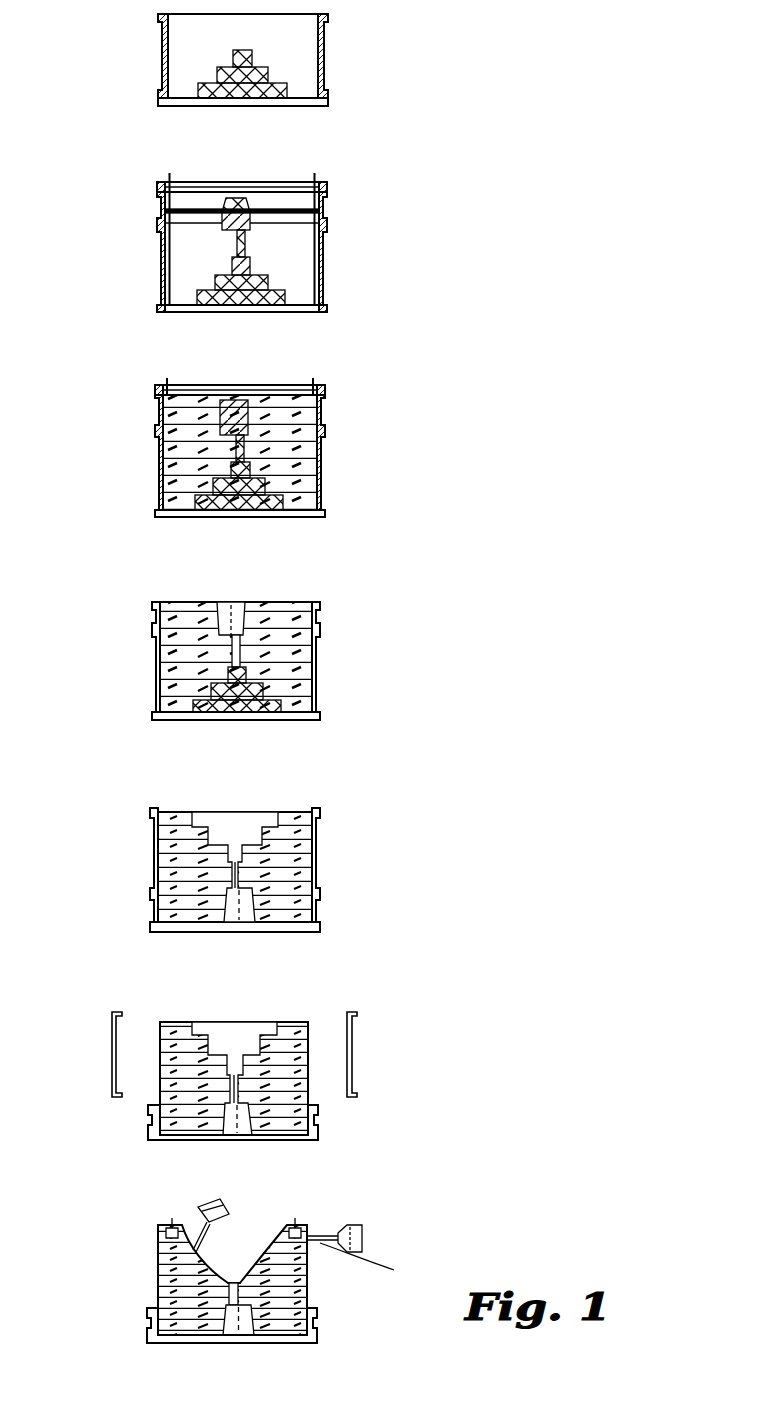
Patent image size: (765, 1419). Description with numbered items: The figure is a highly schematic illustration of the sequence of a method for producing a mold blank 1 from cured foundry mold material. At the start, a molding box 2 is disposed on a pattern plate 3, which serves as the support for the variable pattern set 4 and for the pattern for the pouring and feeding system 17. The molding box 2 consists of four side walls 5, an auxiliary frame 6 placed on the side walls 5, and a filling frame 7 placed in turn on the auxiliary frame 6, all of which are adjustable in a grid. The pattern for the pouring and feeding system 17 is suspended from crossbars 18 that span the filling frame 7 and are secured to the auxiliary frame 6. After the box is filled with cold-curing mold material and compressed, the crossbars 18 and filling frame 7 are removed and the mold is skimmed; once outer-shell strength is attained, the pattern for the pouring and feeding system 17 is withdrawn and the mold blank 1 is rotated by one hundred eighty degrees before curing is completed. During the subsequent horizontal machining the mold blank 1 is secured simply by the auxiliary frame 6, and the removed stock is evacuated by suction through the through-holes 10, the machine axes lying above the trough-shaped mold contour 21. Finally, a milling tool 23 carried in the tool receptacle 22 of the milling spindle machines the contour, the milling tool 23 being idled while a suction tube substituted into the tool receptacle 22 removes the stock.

The mold blank 1 is at (294, 878).
The molding box 2 is at (325, 70).
The pattern plate 3 is at (305, 105).
The variable pattern set 4 is at (218, 77).
The side walls 5 is at (327, 285).
The auxiliary frame 6 is at (320, 216).
The filling frame 7 is at (327, 191).
The through-holes 10 is at (225, 1288).
The pattern for the pouring and feeding system 17 is at (222, 226).
The crossbars 18 is at (200, 181).
The trough-shaped mold contour 21 is at (258, 827).
The tool receptacle 22 is at (362, 1230).
The milling tool 23 is at (371, 1262).